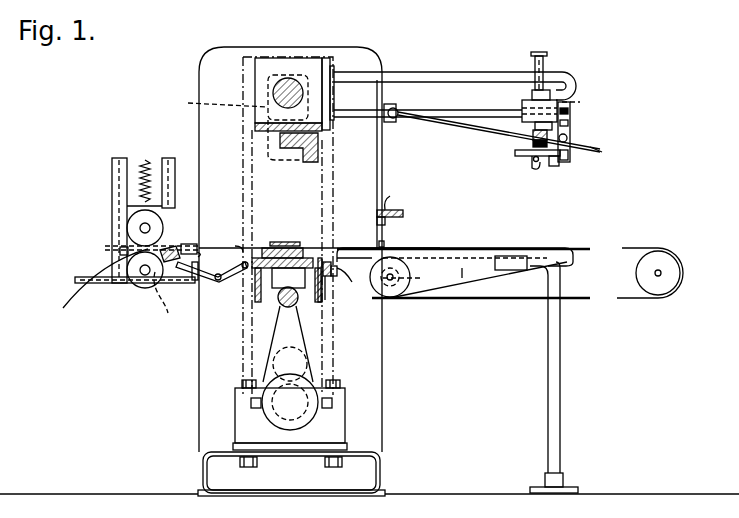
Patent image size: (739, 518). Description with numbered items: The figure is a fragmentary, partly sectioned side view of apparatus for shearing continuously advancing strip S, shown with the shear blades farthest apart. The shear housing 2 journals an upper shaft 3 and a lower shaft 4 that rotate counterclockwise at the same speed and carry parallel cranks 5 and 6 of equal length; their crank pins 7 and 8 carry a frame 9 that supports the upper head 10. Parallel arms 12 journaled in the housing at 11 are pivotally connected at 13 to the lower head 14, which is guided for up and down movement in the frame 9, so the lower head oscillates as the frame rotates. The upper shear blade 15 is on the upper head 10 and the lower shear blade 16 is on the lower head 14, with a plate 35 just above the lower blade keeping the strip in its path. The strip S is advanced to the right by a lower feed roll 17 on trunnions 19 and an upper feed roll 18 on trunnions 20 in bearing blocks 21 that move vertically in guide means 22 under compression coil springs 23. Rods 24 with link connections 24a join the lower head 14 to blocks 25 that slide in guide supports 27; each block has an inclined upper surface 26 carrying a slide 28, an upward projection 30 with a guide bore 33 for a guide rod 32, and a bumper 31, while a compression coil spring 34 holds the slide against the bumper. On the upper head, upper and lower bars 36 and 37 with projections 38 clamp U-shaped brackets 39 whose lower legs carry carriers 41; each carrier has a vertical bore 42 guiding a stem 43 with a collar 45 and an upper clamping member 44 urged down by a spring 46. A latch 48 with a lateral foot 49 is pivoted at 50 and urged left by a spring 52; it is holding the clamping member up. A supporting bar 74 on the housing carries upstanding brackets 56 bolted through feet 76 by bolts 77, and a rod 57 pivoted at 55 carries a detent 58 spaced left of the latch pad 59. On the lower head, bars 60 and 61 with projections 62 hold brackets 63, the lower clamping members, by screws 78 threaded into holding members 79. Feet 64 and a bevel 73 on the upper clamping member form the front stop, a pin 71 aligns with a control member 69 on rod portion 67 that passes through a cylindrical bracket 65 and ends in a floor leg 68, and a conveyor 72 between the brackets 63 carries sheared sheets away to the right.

The shear housing 2 is at (207, 55).
The upper shaft 3 is at (282, 163).
The lower shaft 4 is at (318, 417).
The crank 5 is at (221, 101).
The crank 6 is at (263, 410).
The crank pin 7 is at (288, 85).
The crank pin 8 is at (282, 366).
The frame 9 is at (243, 175).
The upper head 10 is at (306, 62).
The journal 11 is at (293, 392).
The parallel arms 12 is at (288, 335).
The pivot connection 13 is at (283, 300).
The lower head 14 is at (274, 268).
The upper shear blade 15 is at (310, 160).
The lower shear blade 16 is at (284, 243).
The lower feed roll 17 is at (141, 293).
The upper feed roll 18 is at (133, 222).
The trunnions 19 is at (137, 272).
The trunnions 20 is at (142, 230).
The bearing blocks 21 is at (133, 206).
The guide means 22 is at (118, 176).
The compression coil springs 23 is at (147, 165).
The rods 24 is at (194, 281).
The link connections 24a is at (236, 250).
The blocks 25 is at (112, 266).
The inclined upper surface 26 is at (147, 289).
The guide supports 27 is at (77, 279).
The slide 28 is at (163, 247).
The upward projection 30 is at (177, 254).
The bumper 31 is at (121, 242).
The guide rod 32 is at (192, 258).
The guide bore 33 is at (168, 312).
The compression coil spring 34 is at (158, 253).
The plate 35 is at (292, 249).
The upper bar 36 is at (331, 68).
The lower bar 37 is at (327, 128).
The projection 38 is at (334, 76).
The bracket 39 is at (410, 76).
The carrier 41 is at (523, 105).
The vertical bore 42 is at (580, 96).
The vertical stem 43 is at (545, 72).
The upper clamping member 44 is at (521, 153).
The collar 45 is at (530, 54).
The compression coil spring 46 is at (526, 140).
The latch 48 is at (572, 138).
The lateral foot 49 is at (566, 160).
The pivot 50 is at (571, 112).
The spring 52 is at (570, 125).
The pivot 55 is at (395, 121).
The upstanding bracket 56 is at (380, 160).
The rod 57 is at (462, 127).
The detent 58 is at (484, 133).
The pad 59 is at (598, 151).
The upper bar 60 is at (340, 258).
The lower bar 61 is at (333, 278).
The projection 62 is at (338, 262).
The bracket 63 is at (378, 290).
The feet 64 is at (552, 167).
The cylindrical bracket 65 is at (410, 286).
The rod portion 67 is at (462, 279).
The leg 68 is at (560, 354).
The control member 69 is at (503, 272).
The pin 71 is at (536, 168).
The conveyor 72 is at (450, 300).
The bevel 73 is at (528, 158).
The supporting bar 74 is at (386, 224).
The foot 76 is at (403, 212).
The bolt 77 is at (392, 198).
The screw 78 is at (350, 282).
The holding member 79 is at (323, 270).
The strip S is at (68, 310).